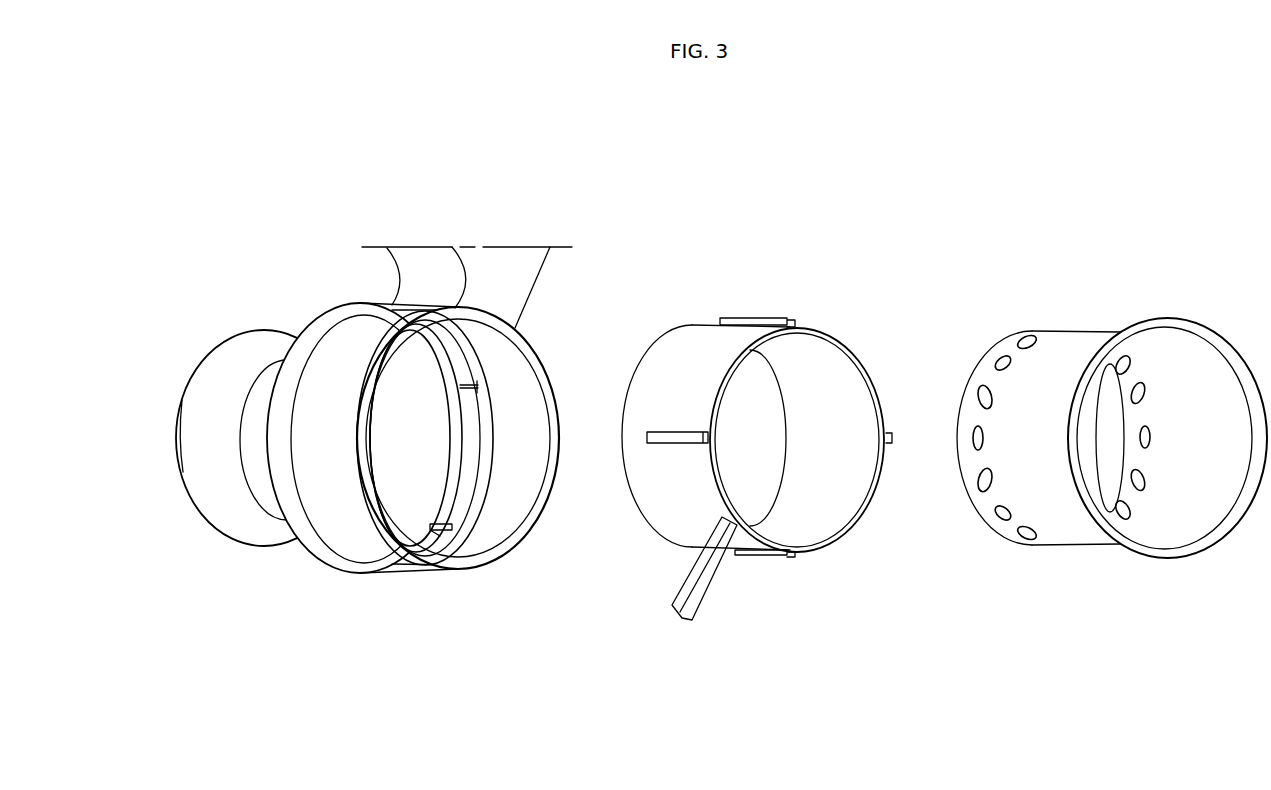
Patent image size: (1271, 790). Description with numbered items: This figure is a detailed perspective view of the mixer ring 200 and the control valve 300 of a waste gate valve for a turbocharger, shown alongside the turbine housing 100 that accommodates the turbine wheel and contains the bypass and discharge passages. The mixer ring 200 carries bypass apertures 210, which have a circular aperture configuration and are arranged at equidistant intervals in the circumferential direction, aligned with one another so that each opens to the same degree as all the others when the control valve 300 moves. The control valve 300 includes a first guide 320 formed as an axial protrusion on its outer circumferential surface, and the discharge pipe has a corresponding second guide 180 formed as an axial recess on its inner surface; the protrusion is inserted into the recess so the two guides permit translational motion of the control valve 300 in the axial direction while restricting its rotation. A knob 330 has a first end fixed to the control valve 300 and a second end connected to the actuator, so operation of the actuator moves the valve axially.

The turbine housing 100 is at (407, 602).
The second guide 180 is at (459, 555).
The mixer ring 200 is at (1093, 537).
The bypass apertures 210 is at (1027, 543).
The control valve 300 is at (700, 343).
The first guide 320 is at (775, 557).
The knob 330 is at (700, 588).